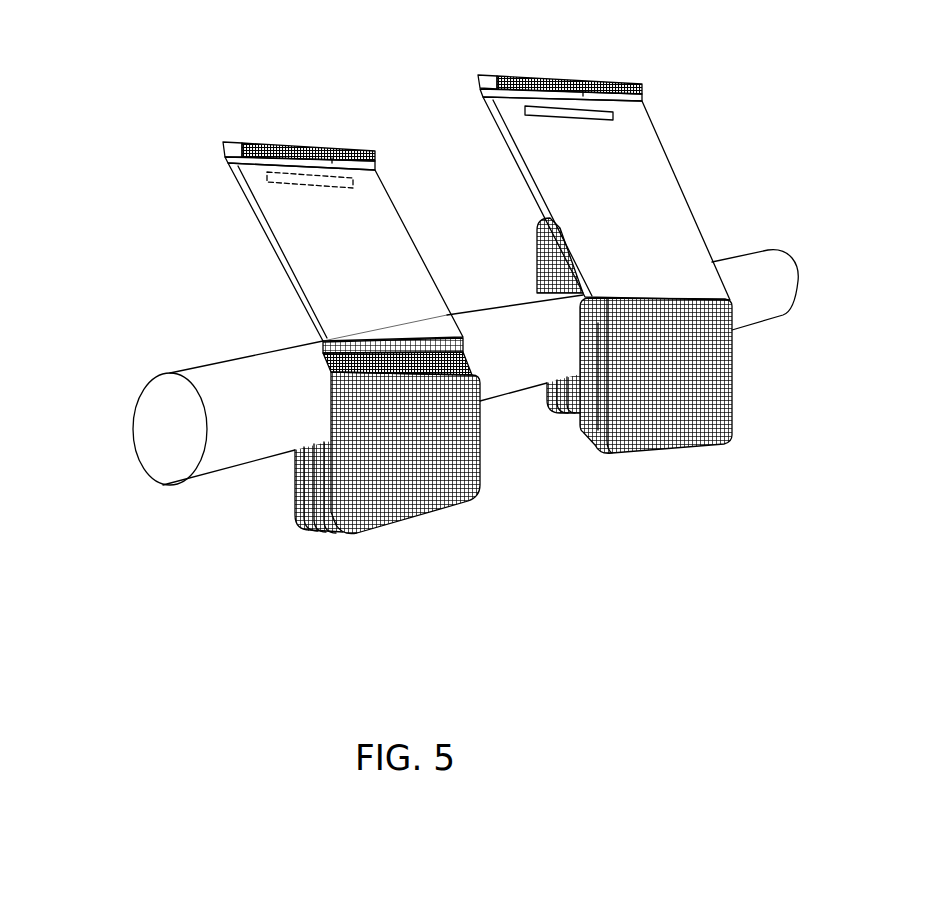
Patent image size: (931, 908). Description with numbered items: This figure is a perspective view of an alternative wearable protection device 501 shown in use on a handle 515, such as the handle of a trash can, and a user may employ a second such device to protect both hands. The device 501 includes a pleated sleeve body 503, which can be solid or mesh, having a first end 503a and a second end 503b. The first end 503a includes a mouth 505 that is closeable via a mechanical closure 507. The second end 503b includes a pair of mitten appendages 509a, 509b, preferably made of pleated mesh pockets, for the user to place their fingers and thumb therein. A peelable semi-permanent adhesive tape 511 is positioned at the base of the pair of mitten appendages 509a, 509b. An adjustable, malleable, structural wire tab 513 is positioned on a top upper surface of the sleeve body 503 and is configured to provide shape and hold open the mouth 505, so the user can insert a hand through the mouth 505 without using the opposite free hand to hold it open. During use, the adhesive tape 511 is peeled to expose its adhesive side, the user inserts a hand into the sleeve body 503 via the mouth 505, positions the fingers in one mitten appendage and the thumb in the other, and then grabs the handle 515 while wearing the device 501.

The wearable protection device 501 is at (112, 38).
The pleated sleeve body 503 is at (535, 187).
The first end 503a is at (470, 103).
The second end 503b is at (557, 280).
The mouth 505 is at (333, 160).
The mechanical closure 507 is at (273, 143).
The mitten appendage 509a is at (303, 513).
The mitten appendage 509b is at (388, 517).
The peelable semi-permanent adhesive tape 511 is at (318, 340).
The structural wire tab 513 is at (267, 176).
The handle 515 is at (208, 467).